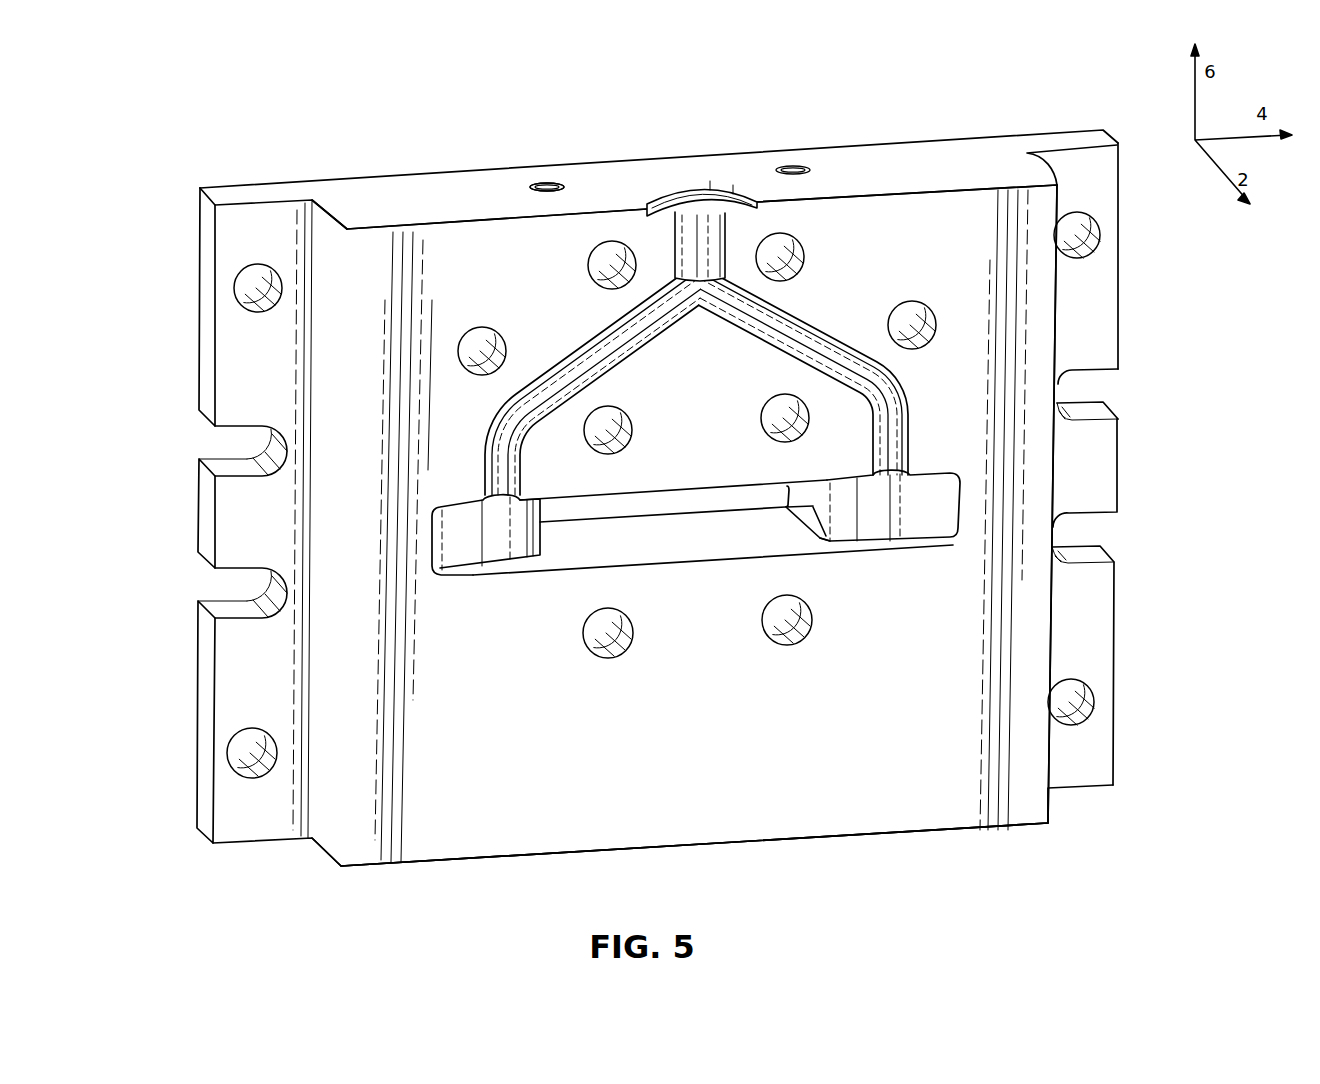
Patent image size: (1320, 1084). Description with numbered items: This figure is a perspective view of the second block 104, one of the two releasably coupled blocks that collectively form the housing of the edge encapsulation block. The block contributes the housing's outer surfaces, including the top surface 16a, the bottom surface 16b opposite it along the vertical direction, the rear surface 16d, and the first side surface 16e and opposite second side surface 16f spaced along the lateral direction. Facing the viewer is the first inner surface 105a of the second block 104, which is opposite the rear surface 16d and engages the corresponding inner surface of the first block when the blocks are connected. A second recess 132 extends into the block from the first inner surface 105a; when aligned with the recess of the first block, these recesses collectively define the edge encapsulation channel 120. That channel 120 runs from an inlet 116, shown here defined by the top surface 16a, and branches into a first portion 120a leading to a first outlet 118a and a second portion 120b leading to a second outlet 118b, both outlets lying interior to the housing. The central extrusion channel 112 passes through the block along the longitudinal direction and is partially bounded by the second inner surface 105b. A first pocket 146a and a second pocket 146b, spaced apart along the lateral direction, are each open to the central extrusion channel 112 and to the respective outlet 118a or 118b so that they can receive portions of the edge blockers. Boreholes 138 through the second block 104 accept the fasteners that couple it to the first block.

The second block 104 is at (240, 217).
The top surface 16a is at (413, 197).
The bottom surface 16b is at (888, 835).
The rear surface 16d is at (907, 147).
The first side surface 16e is at (1057, 288).
The second side surface 16f is at (323, 395).
The first inner surface 105a is at (699, 525).
The second inner surface 105b is at (883, 547).
The central extrusion channel 112 is at (750, 540).
The inlet 116 is at (698, 193).
The first outlet 118a is at (898, 458).
The second outlet 118b is at (493, 478).
The edge encapsulation channel 120 is at (696, 292).
The first portion 120a is at (800, 333).
The second portion 120b is at (577, 353).
The second recess 132 is at (593, 333).
The boreholes 138 is at (773, 632).
The first pocket 146a is at (920, 508).
The second pocket 146b is at (470, 545).